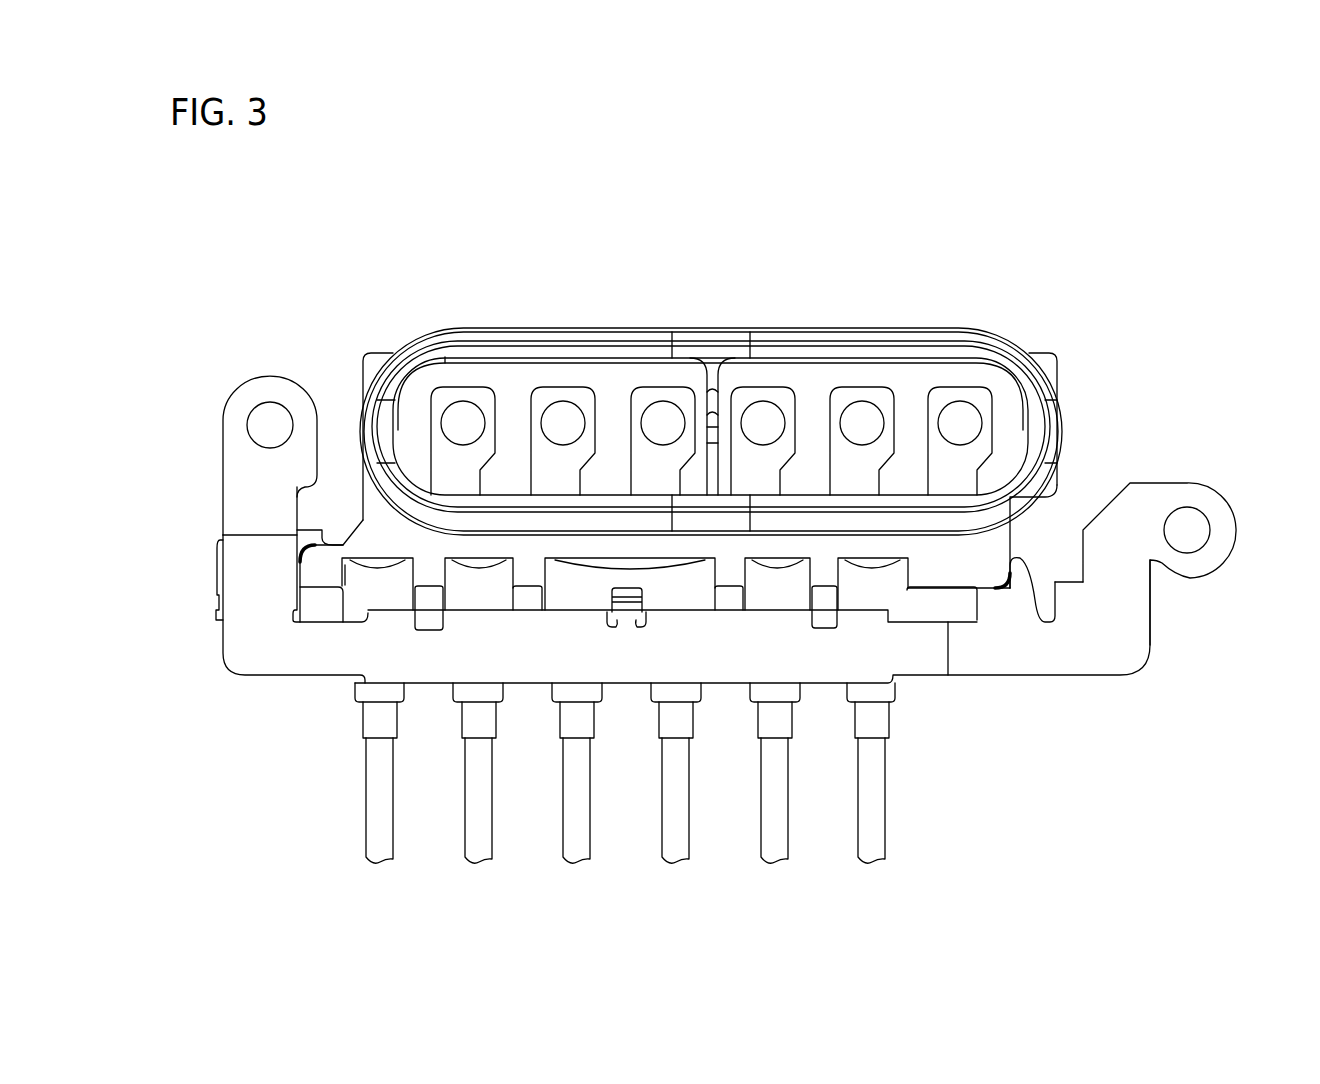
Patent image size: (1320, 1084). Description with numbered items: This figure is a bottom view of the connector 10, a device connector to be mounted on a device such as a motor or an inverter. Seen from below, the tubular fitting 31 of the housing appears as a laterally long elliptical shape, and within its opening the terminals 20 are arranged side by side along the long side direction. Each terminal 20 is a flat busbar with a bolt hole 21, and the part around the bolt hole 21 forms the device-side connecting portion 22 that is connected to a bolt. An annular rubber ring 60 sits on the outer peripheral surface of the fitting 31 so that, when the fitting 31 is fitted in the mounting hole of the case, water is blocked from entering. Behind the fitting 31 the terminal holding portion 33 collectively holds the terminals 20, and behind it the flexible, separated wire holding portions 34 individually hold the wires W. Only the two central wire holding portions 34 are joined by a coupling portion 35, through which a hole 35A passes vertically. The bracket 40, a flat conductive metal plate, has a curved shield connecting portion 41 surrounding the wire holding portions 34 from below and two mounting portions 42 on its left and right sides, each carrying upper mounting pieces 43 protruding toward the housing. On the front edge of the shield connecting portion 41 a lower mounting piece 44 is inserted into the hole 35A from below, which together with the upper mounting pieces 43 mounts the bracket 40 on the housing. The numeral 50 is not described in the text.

The connector 10 is at (718, 228).
The terminal 20 is at (656, 393).
The bolt hole 21 is at (634, 398).
The device-side connecting portion 22 is at (680, 413).
The fitting 31 is at (804, 343).
The terminal holding portion 33 is at (617, 552).
The wire holding portion 34 is at (562, 690).
The coupling portion 35 is at (607, 628).
The hole 35A is at (642, 628).
The bracket 40 is at (968, 668).
The shield connecting portion 41 is at (828, 660).
The mounting portion 42 is at (246, 393).
The upper mounting piece 43 is at (319, 568).
The lower mounting piece 44 is at (626, 655).
The wire crimp portion 50 is at (577, 730).
The rubber ring 60 is at (864, 330).
The wire W is at (570, 832).